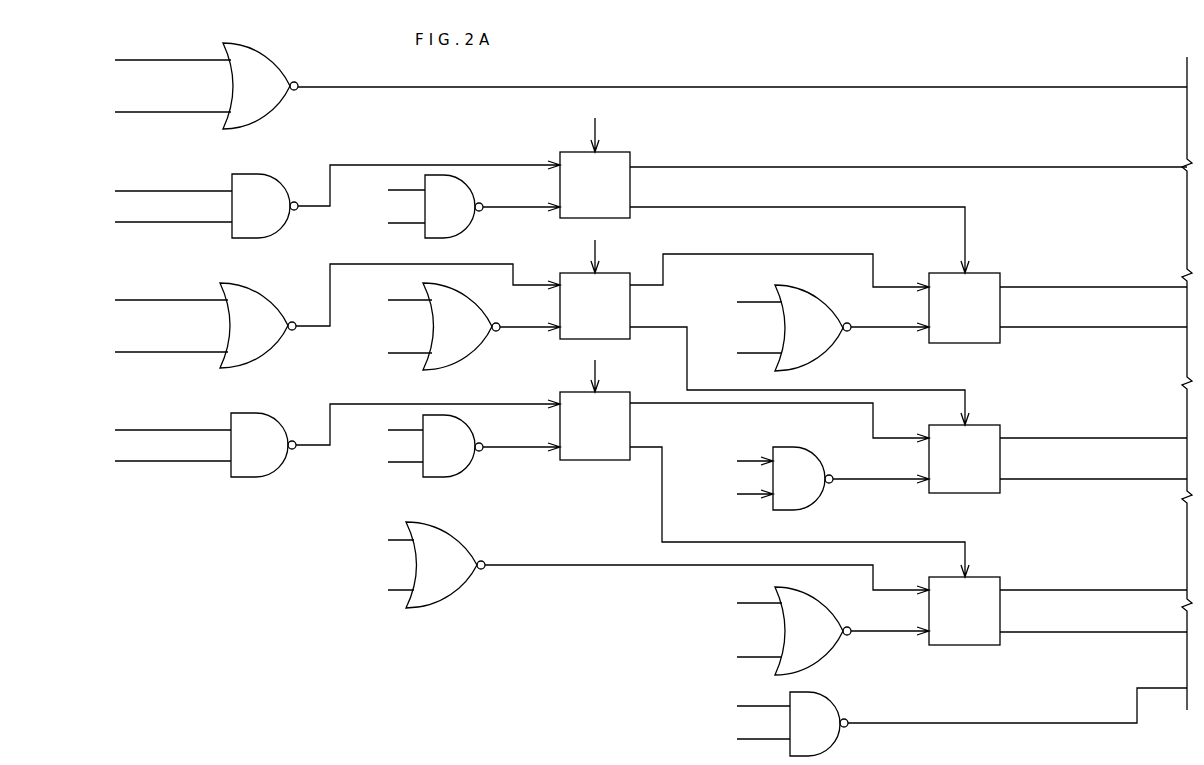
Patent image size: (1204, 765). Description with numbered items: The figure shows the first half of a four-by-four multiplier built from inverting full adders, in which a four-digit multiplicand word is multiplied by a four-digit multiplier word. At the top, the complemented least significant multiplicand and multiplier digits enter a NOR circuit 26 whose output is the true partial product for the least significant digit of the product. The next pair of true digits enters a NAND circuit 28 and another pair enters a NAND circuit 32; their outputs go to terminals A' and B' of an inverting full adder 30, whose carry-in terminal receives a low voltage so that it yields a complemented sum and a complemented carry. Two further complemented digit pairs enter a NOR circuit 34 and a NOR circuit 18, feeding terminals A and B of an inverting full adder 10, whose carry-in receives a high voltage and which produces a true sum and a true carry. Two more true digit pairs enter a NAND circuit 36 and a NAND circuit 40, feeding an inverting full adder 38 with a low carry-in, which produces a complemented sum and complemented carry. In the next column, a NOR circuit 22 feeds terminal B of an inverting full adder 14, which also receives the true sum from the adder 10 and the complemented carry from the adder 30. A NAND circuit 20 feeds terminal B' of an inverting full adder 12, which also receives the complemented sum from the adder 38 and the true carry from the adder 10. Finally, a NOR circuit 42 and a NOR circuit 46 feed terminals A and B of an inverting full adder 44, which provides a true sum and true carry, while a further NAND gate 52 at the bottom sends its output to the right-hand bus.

The inverting full adder 10 is at (583, 327).
The inverting full adder 12 is at (950, 480).
The inverting full adder 14 is at (955, 328).
The NOR circuit 18 is at (455, 350).
The NAND circuit 20 is at (795, 485).
The NOR circuit 22 is at (808, 340).
The NOR circuit 26 is at (250, 73).
The NAND circuit 28 is at (254, 193).
The inverting full adder 30 is at (608, 207).
The NAND circuit 32 is at (452, 218).
The NOR circuit 34 is at (252, 308).
The NAND circuit 36 is at (253, 428).
The inverting full adder 38 is at (598, 447).
The NAND circuit 40 is at (440, 463).
The NOR circuit 42 is at (447, 575).
The inverting full adder 44 is at (975, 635).
The NOR circuit 46 is at (808, 645).
The NAND gate 52 is at (815, 735).